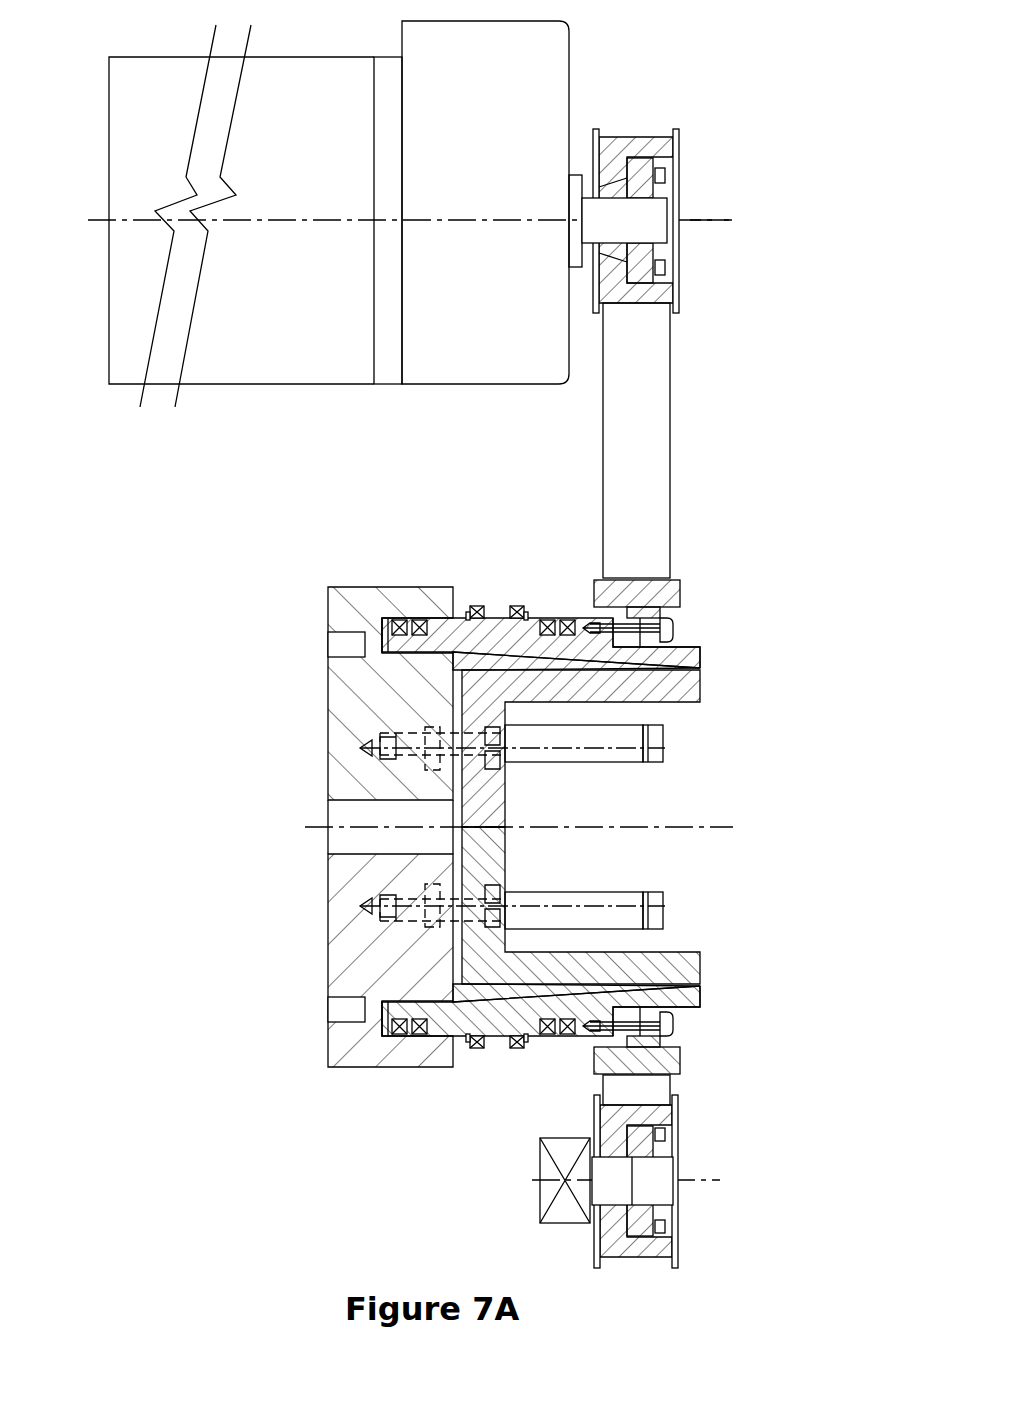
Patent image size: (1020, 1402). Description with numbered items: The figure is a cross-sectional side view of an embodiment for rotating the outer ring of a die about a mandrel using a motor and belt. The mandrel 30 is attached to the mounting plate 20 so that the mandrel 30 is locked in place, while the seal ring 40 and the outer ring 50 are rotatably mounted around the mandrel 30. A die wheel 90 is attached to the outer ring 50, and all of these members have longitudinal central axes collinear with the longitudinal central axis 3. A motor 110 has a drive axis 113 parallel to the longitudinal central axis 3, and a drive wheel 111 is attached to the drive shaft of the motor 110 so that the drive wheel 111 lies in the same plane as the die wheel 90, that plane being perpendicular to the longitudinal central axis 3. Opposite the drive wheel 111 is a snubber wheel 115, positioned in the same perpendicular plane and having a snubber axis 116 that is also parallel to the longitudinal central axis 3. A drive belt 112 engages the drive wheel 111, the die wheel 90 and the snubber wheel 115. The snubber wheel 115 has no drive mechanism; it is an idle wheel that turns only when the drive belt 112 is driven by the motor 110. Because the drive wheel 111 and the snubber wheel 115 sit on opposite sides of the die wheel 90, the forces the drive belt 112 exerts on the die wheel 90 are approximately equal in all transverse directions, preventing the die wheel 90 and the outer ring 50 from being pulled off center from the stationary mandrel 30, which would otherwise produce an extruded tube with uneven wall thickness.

The longitudinal central axis 3 is at (678, 825).
The mounting plate 20 is at (338, 1060).
The mandrel 30 is at (668, 965).
The seal ring 40 is at (503, 1032).
The outer ring 50 is at (685, 1000).
The die wheel 90 is at (672, 1057).
The motor 110 is at (533, 85).
The drive wheel 111 is at (675, 148).
The drive belt 112 is at (670, 360).
The drive axis 113 is at (700, 223).
The snubber wheel 115 is at (680, 1248).
The snubber axis 116 is at (702, 1180).